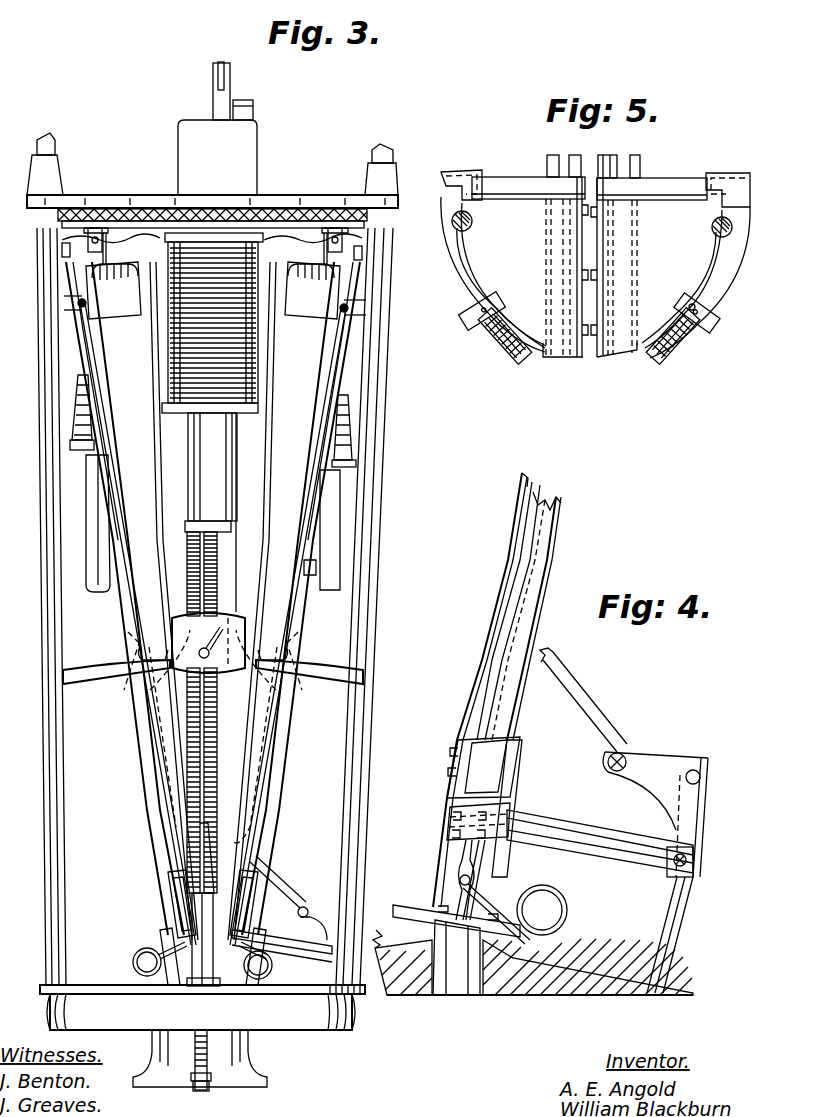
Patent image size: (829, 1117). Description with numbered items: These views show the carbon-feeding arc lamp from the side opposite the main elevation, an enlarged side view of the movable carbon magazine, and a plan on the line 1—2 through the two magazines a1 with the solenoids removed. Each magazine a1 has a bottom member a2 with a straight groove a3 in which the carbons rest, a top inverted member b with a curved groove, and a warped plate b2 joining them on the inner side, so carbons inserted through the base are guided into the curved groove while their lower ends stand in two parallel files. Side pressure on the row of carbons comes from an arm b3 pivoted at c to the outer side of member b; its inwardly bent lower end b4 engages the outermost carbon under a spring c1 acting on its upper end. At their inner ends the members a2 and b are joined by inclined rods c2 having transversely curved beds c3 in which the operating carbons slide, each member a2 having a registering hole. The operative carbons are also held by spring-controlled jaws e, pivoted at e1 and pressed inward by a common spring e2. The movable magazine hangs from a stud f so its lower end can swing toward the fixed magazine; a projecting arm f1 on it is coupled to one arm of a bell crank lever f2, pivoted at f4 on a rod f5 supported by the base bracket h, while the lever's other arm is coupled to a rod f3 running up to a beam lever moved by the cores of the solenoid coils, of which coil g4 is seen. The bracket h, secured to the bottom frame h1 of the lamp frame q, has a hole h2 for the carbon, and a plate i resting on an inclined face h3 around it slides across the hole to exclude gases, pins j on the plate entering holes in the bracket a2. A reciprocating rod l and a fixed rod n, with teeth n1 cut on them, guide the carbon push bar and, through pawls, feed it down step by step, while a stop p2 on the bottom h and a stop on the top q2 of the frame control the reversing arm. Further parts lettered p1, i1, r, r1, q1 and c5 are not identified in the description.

In FIG. 3, the rod l is at (232, 90).
In FIG. 3, the pole piece p1 is at (240, 160).
In FIG. 3, the top of lamp frame q2 is at (288, 199).
In FIG. 3, the contact screw i1 is at (72, 244).
In FIG. 3, the section line end 1 is at (88, 252).
In FIG. 3, the section line end 2 is at (336, 254).
In FIG. 3, the spring c1 is at (110, 250).
In FIG. 5, the spring c1 is at (508, 350).
In FIG. 3, the stud f is at (330, 250).
In FIG. 5, the stud f is at (716, 226).
In FIG. 3, the pivot c is at (76, 303).
In FIG. 5, the pivot c is at (690, 305).
In FIG. 3, the top inverted member b is at (122, 312).
In FIG. 5, the top inverted member b is at (448, 250).
In FIG. 3, the coil g4 is at (70, 436).
In FIG. 3, the coil core r is at (186, 416).
In FIG. 3, the collar r1 is at (208, 499).
In FIG. 3, the rod f3 is at (236, 482).
In FIG. 4, the rod f3 is at (596, 712).
In FIG. 3, the plate b2 is at (213, 401).
In FIG. 5, the plate b2 is at (591, 275).
In FIG. 4, the plate b2 is at (475, 680).
In FIG. 3, the magazines a1 is at (158, 548).
In FIG. 5, the magazines a1 is at (472, 300).
In FIG. 4, the magazines a1 is at (512, 650).
In FIG. 3, the fixed rod n is at (196, 551).
In FIG. 3, the teeth n1 is at (197, 639).
In FIG. 3, the lamp frame q is at (358, 724).
In FIG. 3, the frame post q1 is at (46, 718).
In FIG. 3, the arm b3 is at (131, 620).
In FIG. 5, the arm b3 is at (466, 322).
In FIG. 3, the lower end of arm b4 is at (130, 682).
In FIG. 3, the inclined rods c2 is at (146, 748).
In FIG. 5, the inclined rods c2 is at (462, 175).
In FIG. 4, the inclined rods c2 is at (511, 611).
In FIG. 3, the transversely-curved beds c3 is at (155, 815).
In FIG. 4, the rod end c5 is at (549, 495).
In FIG. 3, the stop p2 is at (196, 854).
In FIG. 3, the straight groove a3 is at (165, 903).
In FIG. 5, the straight groove a3 is at (604, 155).
In FIG. 4, the straight groove a3 is at (483, 767).
In FIG. 3, the bottom member a2 is at (168, 926).
In FIG. 5, the bottom member a2 is at (552, 165).
In FIG. 4, the bottom member a2 is at (516, 778).
In FIG. 3, the pivot e1 is at (150, 950).
In FIG. 4, the pivot e1 is at (446, 814).
In FIG. 3, the spring e2 is at (134, 970).
In FIG. 4, the spring e2 is at (570, 918).
In FIG. 3, the jaws e is at (192, 988).
In FIG. 4, the jaws e is at (480, 862).
In FIG. 3, the bell crank lever f2 is at (308, 906).
In FIG. 4, the bell crank lever f2 is at (655, 768).
In FIG. 3, the projecting arm f1 is at (282, 944).
In FIG. 4, the projecting arm f1 is at (594, 830).
In FIG. 4, the pivot f4 is at (704, 774).
In FIG. 3, the rod f5 is at (362, 990).
In FIG. 4, the rod f5 is at (672, 926).
In FIG. 4, the base bracket h is at (540, 998).
In FIG. 3, the bottom frame h1 is at (202, 1038).
In FIG. 4, the hole h2 is at (460, 990).
In FIG. 4, the inclined face h3 is at (420, 940).
In FIG. 4, the plate i is at (420, 912).
In FIG. 4, the pins j is at (482, 942).